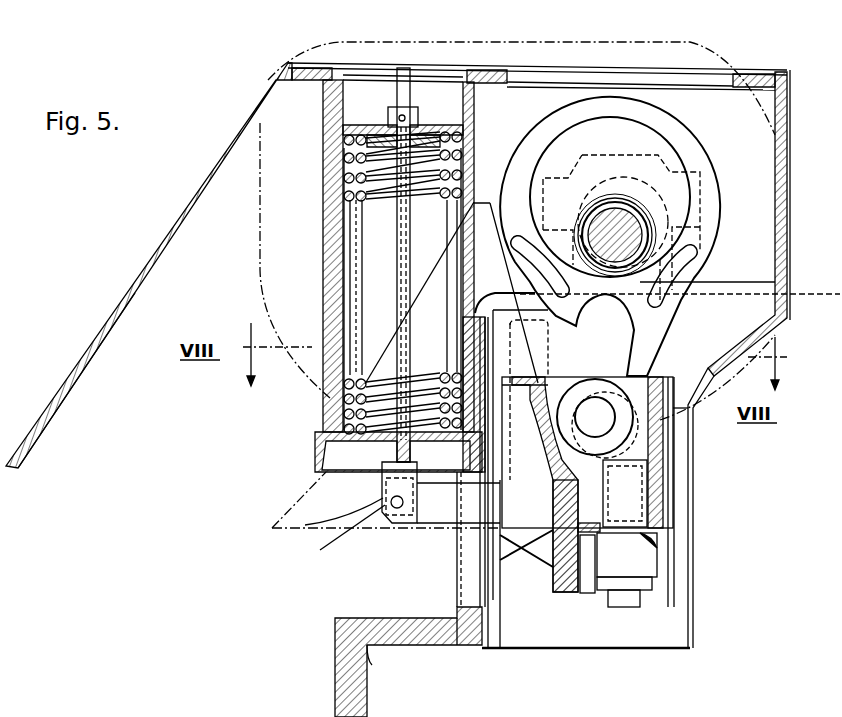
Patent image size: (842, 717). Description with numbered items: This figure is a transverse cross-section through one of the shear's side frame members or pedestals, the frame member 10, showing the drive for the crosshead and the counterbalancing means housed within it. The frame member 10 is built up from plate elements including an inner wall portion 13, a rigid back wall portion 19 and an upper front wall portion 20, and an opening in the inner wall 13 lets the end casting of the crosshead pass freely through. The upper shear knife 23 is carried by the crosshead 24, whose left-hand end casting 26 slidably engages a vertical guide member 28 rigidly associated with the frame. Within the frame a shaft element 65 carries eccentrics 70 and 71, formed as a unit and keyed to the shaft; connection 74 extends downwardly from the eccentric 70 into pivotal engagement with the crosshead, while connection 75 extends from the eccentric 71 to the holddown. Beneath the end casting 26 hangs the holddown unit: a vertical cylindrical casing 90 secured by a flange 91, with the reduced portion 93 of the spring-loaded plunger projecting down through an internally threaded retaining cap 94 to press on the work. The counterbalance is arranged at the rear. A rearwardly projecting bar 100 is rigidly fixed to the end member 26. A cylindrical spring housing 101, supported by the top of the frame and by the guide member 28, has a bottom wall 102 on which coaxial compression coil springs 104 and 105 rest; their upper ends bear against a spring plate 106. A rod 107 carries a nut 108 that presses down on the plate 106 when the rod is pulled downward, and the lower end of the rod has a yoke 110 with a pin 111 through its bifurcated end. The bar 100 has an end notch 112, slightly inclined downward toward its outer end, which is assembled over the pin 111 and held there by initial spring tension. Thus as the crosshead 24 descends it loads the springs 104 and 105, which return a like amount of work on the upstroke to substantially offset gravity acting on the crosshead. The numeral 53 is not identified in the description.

The side frame member 10 is at (221, 160).
The inner wall portion 13 is at (172, 415).
The back wall portion 19 is at (140, 242).
The upper front wall portion 20 is at (775, 135).
The upper shear knife 23 is at (588, 594).
The crosshead 24 is at (290, 508).
The end casting of the crosshead 26 is at (565, 592).
The vertical guide member 28 is at (470, 590).
The cover 53 is at (432, 44).
The shaft element 65 is at (640, 238).
The eccentric 70 is at (668, 142).
The eccentric 71 is at (664, 206).
The connection 74 is at (530, 142).
The connection 75 is at (672, 168).
The cylindrical casing 90 is at (640, 503).
The flange 91 is at (626, 533).
The reduced portion of the plunger 93 is at (622, 607).
The retaining cap 94 is at (645, 590).
The bar 100 is at (438, 510).
The cylindrical spring housing 101 is at (323, 182).
The bottom wall 102 is at (361, 462).
The compression coil spring 104 is at (372, 252).
The compression coil spring 105 is at (352, 230).
The spring plate 106 is at (370, 112).
The rod 107 is at (393, 272).
The nut 108 is at (415, 118).
The yoke 110 is at (408, 502).
The pin 111 is at (340, 539).
The end notch 112 is at (305, 525).